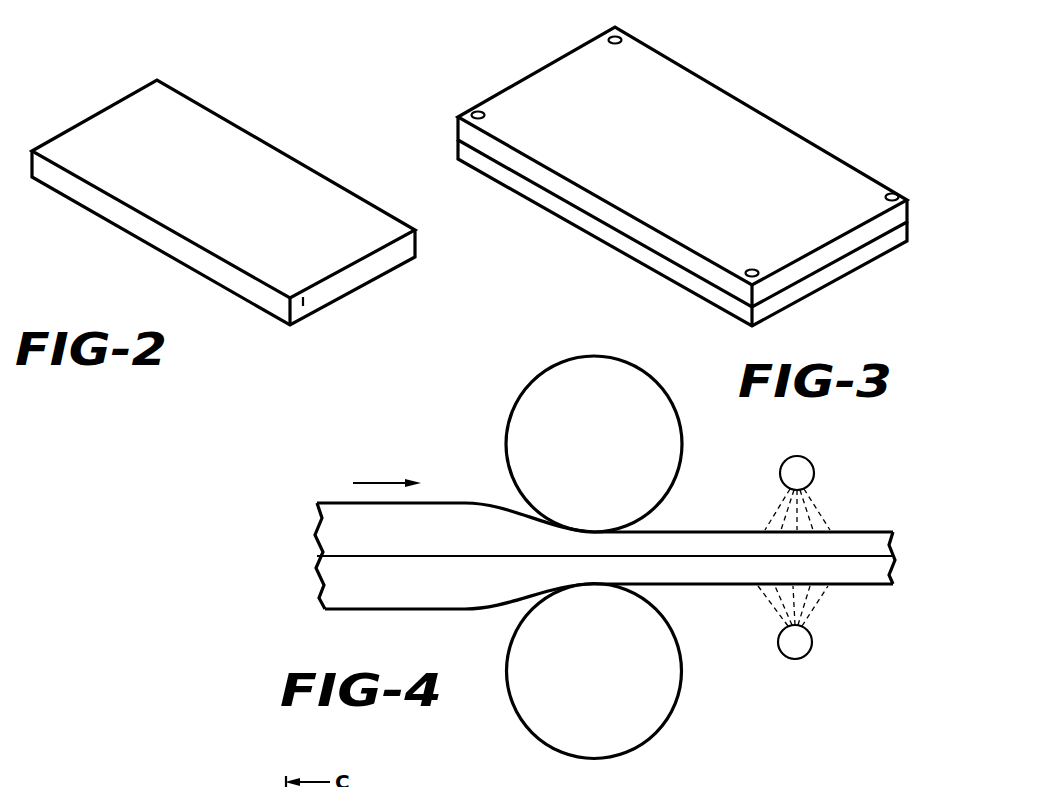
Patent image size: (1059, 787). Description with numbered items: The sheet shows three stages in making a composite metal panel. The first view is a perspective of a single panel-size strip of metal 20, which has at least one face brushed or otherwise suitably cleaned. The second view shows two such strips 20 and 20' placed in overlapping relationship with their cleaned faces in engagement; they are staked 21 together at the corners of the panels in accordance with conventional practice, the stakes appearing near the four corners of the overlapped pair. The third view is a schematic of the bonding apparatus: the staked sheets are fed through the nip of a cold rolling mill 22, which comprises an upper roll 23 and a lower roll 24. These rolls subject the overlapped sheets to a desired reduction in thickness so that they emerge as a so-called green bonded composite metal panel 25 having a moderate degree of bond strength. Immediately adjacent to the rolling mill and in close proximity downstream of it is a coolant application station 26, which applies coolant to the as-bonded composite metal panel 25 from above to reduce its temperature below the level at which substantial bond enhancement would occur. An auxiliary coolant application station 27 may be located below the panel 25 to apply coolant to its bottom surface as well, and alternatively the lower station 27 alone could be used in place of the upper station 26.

In FIG. 2, the strip of metal 20 is at (223, 202).
In FIG. 3, the strip of metal 20 is at (688, 167).
In FIG. 3, the second strip of metal 20' is at (693, 233).
In FIG. 3, the stakes 21 is at (626, 43).
In FIG. 4, the cold rolling mill 22 is at (617, 557).
In FIG. 4, the roll 23 is at (537, 398).
In FIG. 4, the roll 24 is at (648, 708).
In FIG. 4, the green bonded composite metal panel 25 is at (685, 532).
In FIG. 4, the coolant application station 26 is at (817, 472).
In FIG. 4, the auxiliary coolant application station 27 is at (803, 650).